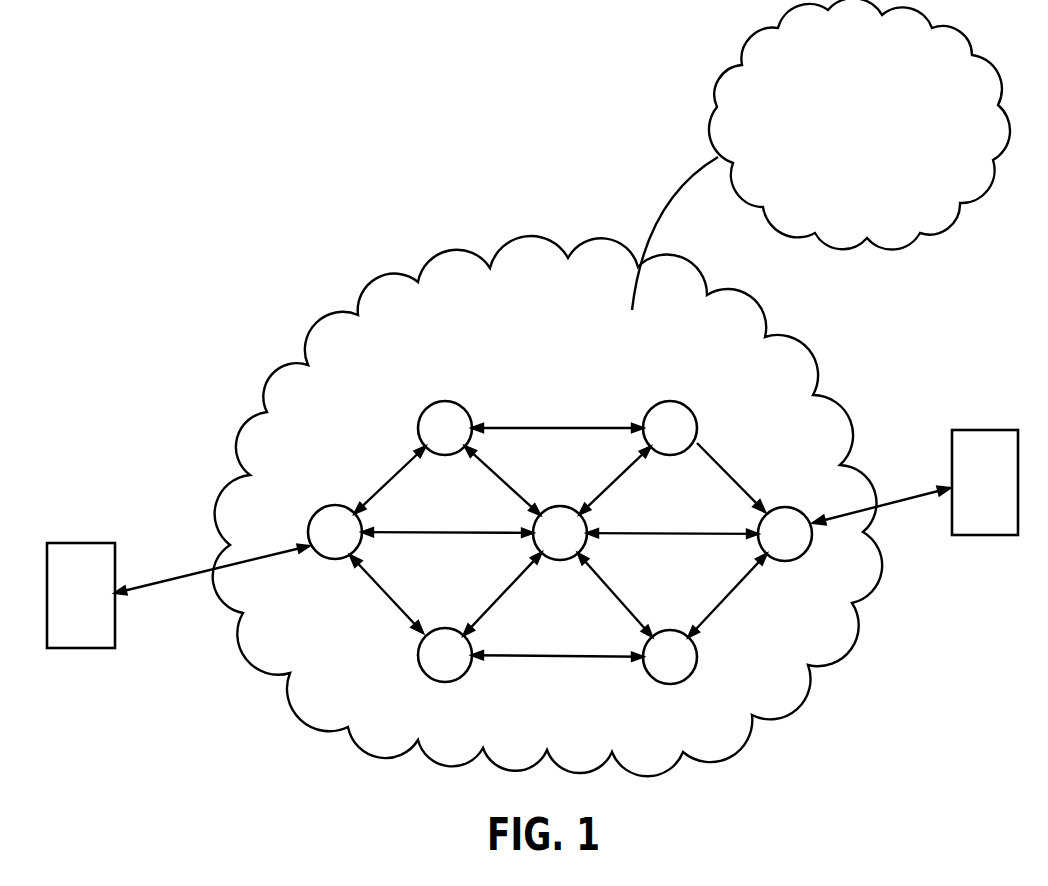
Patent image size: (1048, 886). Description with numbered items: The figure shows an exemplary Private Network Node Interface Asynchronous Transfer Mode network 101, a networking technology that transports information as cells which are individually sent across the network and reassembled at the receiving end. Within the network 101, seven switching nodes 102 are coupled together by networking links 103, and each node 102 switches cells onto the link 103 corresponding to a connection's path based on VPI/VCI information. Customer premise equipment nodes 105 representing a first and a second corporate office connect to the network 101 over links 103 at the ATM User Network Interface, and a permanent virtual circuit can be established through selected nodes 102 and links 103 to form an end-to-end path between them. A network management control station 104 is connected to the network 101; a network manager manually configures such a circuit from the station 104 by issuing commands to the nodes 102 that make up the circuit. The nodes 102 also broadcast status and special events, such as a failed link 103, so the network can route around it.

The PNNI ATM network 101 is at (381, 368).
The network nodes 102 is at (576, 538).
The network links 103 is at (532, 559).
The network management control station 104 is at (866, 158).
The customer premise equipment nodes 105 is at (532, 509).